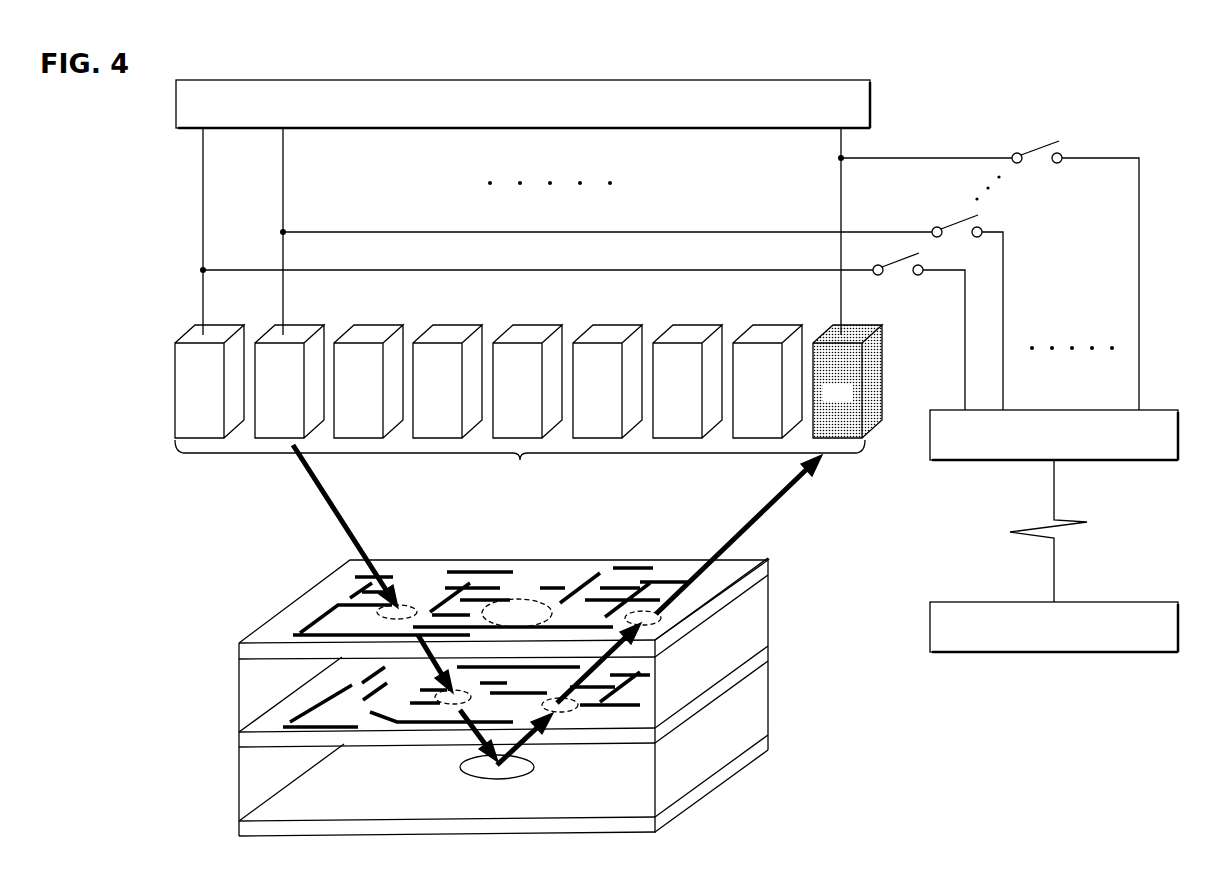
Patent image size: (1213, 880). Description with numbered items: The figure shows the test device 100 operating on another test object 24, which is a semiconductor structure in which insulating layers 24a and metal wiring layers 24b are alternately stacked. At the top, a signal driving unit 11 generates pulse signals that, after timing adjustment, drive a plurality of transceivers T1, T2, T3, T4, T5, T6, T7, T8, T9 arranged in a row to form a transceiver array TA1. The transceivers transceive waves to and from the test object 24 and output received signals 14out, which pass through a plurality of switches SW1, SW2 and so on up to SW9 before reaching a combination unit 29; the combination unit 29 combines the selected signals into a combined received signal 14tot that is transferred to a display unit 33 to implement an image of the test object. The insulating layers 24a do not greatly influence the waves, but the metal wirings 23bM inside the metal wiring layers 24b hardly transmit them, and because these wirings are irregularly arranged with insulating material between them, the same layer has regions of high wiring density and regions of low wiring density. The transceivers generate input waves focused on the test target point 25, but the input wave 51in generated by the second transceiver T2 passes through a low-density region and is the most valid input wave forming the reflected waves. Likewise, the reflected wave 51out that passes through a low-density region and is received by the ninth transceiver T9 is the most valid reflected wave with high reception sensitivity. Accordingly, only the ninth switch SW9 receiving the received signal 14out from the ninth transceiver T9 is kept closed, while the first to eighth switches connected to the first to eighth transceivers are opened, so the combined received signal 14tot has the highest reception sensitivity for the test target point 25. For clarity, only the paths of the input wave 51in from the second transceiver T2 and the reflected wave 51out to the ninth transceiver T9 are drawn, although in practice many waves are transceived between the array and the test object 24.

The test device 100 is at (157, 82).
The signal driving unit 11 is at (870, 100).
The received signals 14out is at (417, 271).
The first switch SW1 is at (919, 331).
The second switch SW2 is at (967, 312).
The ninth switch SW9 is at (1075, 275).
The first transceiver T1 is at (209, 381).
The second transceiver T2 is at (289, 381).
The third transceiver T3 is at (368, 381).
The fourth transceiver T4 is at (447, 381).
The fifth transceiver T5 is at (527, 381).
The sixth transceiver T6 is at (607, 381).
The seventh transceiver T7 is at (687, 381).
The eighth transceiver T8 is at (767, 381).
The ninth transceiver T9 is at (847, 381).
The transceiver array TA1 is at (520, 462).
The input wave 51in is at (318, 499).
The reflected wave 51out is at (780, 496).
The metal wirings 23bM is at (447, 570).
The test object 24 is at (162, 645).
The insulating layers 24a is at (239, 694).
The metal wiring layers 24b is at (239, 650).
The test target point 25 is at (525, 775).
The combination unit 29 is at (1160, 409).
The combined received signal 14tot is at (1087, 523).
The display unit 33 is at (1160, 601).